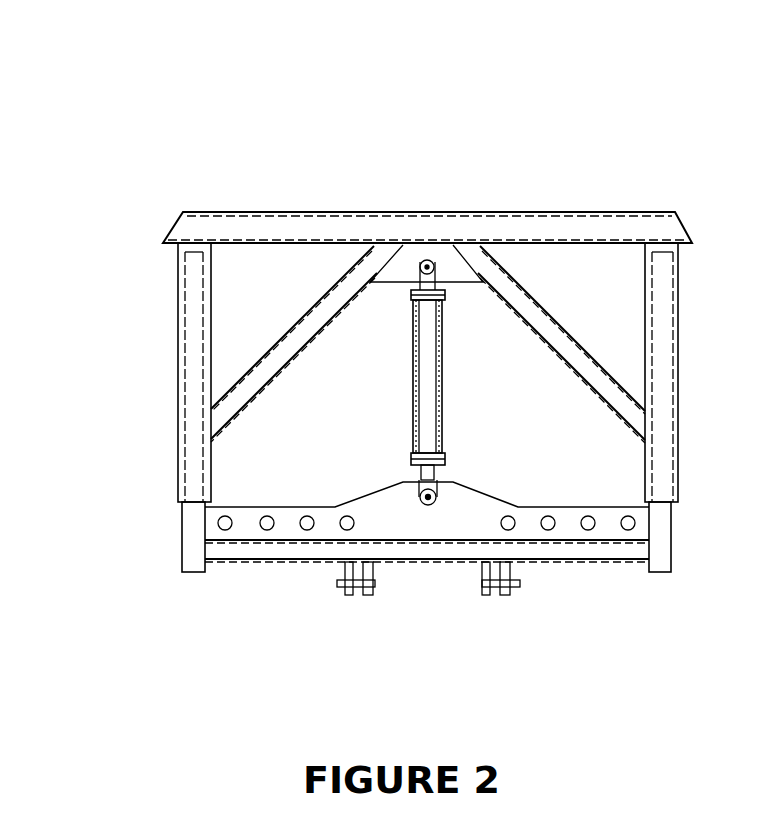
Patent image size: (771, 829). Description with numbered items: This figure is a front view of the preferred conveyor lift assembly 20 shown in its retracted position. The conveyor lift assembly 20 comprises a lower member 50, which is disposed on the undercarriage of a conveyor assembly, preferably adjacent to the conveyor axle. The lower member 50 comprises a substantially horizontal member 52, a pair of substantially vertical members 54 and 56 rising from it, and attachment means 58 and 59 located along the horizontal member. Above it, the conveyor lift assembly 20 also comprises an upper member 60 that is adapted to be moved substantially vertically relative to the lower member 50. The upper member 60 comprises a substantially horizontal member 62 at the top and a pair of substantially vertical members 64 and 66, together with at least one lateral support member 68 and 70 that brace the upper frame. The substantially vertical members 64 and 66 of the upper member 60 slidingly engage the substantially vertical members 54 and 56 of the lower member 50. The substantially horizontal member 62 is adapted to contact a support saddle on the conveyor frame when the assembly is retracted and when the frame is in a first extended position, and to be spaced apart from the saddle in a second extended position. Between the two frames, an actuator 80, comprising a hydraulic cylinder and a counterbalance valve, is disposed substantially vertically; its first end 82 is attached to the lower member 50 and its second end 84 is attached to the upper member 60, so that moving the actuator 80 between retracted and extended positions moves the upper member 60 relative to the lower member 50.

The conveyor lift assembly 20 is at (191, 198).
The lower member 50 is at (261, 571).
The substantially horizontal member 52 is at (568, 562).
The substantially vertical member 54 is at (182, 522).
The substantially vertical member 56 is at (672, 525).
The attachment means 58 is at (368, 600).
The attachment means 59 is at (503, 598).
The upper member 60 is at (376, 198).
The substantially horizontal member 62 is at (503, 212).
The substantially vertical member 64 is at (178, 305).
The substantially vertical member 66 is at (678, 312).
The lateral support member 68 is at (290, 328).
The lateral support member 70 is at (563, 326).
The actuator 80 is at (413, 400).
The first end 82 is at (450, 478).
The second end 84 is at (441, 252).